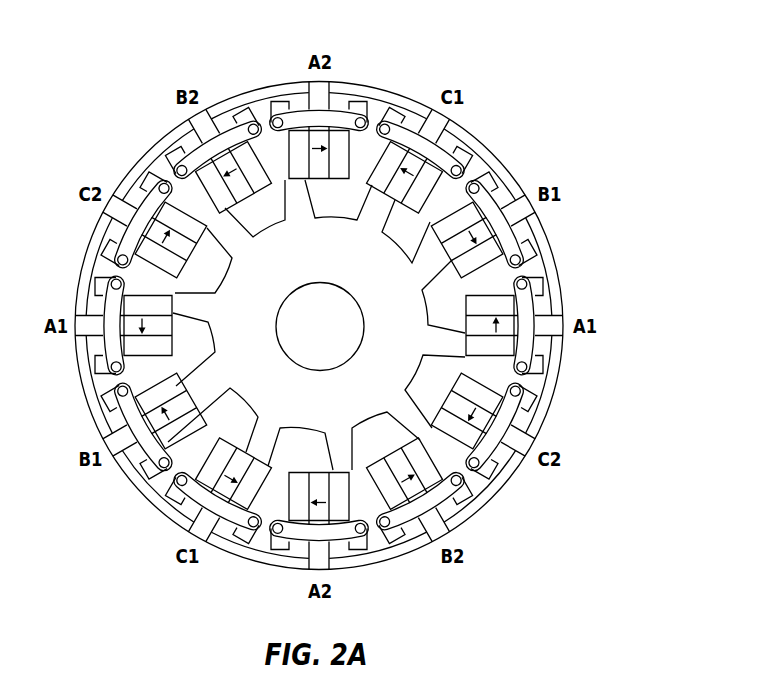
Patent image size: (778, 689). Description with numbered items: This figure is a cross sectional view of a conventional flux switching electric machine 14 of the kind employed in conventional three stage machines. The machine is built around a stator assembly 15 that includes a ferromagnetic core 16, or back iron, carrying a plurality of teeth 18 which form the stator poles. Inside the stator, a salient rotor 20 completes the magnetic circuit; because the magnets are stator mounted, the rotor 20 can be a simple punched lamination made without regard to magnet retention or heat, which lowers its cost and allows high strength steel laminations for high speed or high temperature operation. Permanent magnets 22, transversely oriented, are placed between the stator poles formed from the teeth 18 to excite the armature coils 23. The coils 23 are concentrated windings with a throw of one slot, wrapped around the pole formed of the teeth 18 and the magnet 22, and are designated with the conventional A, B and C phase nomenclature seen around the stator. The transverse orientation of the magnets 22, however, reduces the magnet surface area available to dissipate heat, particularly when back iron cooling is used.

The flux switching electric machine 14 is at (672, 117).
The stator assembly 15 is at (530, 153).
The ferromagnetic core 16 is at (543, 263).
The teeth 18 is at (257, 163).
The salient rotor 20 is at (230, 343).
The permanent magnets 22 is at (442, 126).
The armature coils 23 is at (342, 118).